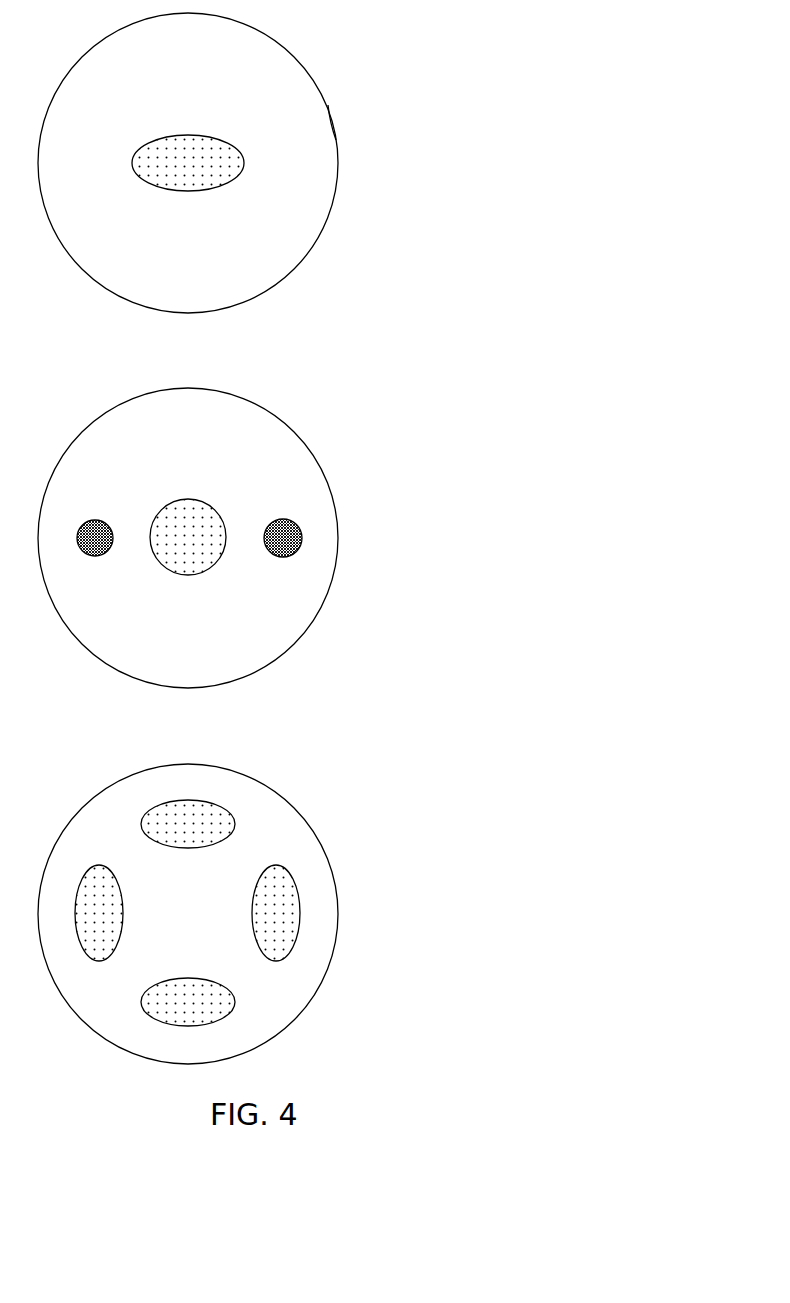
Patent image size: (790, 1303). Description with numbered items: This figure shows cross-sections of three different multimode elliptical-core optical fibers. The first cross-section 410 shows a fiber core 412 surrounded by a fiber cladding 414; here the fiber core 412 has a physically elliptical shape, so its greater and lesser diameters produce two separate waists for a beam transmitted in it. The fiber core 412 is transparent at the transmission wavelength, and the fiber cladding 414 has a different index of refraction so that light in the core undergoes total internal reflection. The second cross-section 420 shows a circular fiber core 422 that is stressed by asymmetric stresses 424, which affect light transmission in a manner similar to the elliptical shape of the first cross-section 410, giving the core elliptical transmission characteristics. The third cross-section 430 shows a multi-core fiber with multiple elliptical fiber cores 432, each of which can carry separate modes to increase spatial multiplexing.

The first cross-section 410 is at (211, 305).
The fiber core 412 is at (243, 163).
The fiber cladding 414 is at (328, 105).
The second cross-section 420 is at (212, 680).
The circular fiber core 422 is at (220, 560).
The asymmetric stresses 424 is at (302, 538).
The third cross-section 430 is at (212, 1055).
The elliptical fiber cores 432 is at (300, 913).